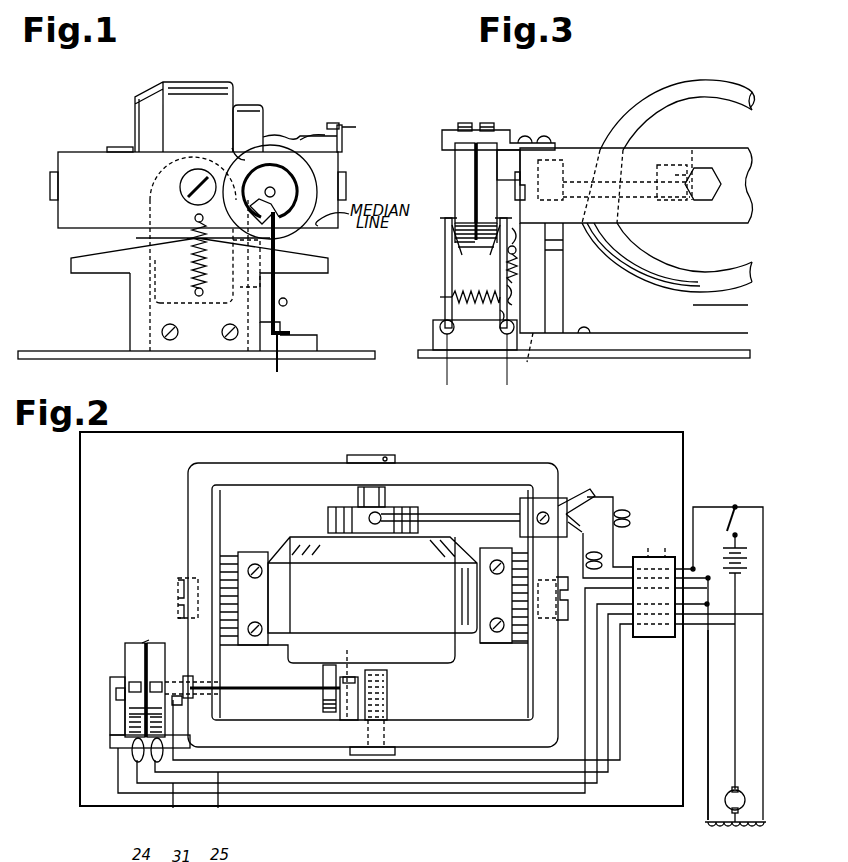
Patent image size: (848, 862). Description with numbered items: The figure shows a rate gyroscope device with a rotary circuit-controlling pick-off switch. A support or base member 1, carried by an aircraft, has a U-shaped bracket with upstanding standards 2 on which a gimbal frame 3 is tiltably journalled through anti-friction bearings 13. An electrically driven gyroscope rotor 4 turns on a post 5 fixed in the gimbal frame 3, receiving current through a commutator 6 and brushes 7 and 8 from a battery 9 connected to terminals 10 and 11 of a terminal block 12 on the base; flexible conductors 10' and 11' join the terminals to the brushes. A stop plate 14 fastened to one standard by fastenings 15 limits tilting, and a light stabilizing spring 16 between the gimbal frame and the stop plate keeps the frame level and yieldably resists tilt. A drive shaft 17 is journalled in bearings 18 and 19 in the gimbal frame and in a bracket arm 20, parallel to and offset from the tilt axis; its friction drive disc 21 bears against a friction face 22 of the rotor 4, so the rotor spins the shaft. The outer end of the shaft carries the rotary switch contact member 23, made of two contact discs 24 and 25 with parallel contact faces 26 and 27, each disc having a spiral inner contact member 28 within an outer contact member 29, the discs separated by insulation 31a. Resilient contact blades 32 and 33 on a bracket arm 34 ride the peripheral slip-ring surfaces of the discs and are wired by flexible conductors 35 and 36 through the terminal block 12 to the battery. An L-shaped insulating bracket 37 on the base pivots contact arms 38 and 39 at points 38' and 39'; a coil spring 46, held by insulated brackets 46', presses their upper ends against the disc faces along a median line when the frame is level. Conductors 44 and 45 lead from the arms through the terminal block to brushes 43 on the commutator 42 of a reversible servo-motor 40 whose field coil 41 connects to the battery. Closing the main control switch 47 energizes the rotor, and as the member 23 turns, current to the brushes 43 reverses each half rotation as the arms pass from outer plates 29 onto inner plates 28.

In FIG. 1, the support or base member 1 is at (66, 336).
In FIG. 3, the support or base member 1 is at (621, 357).
In FIG. 2, the support or base member 1 is at (612, 415).
In FIG. 1, the supporting arms or standards 2 is at (160, 238).
In FIG. 3, the supporting arms or standards 2 is at (560, 288).
In FIG. 2, the supporting arms or standards 2 is at (248, 566).
In FIG. 1, the gimbal frame 3 is at (62, 226).
In FIG. 3, the gimbal frame 3 is at (578, 218).
In FIG. 2, the gimbal frame 3 is at (189, 557).
In FIG. 1, the gyroscope rotor 4 is at (210, 90).
In FIG. 3, the gyroscope rotor 4 is at (712, 74).
In FIG. 2, the gyroscope rotor 4 is at (384, 602).
In FIG. 2, the post 5 is at (388, 701).
In FIG. 2, the commutator 6 is at (330, 522).
In FIG. 2, the brush 7 is at (477, 516).
In FIG. 2, the brush 8 is at (495, 516).
In FIG. 2, the battery 9 is at (740, 575).
In FIG. 2, the terminal 10 is at (641, 545).
In FIG. 2, the flexible conductor 10' is at (616, 529).
In FIG. 2, the terminal 11 is at (665, 546).
In FIG. 2, the flexible conductor 11' is at (594, 555).
In FIG. 2, the terminal block 12 is at (648, 634).
In FIG. 1, the anti-friction bearings 13 is at (206, 180).
In FIG. 2, the anti-friction bearings 13 is at (190, 586).
In FIG. 1, the stop plate 14 is at (133, 318).
In FIG. 3, the stop plate 14 is at (535, 307).
In FIG. 2, the stop plate 14 is at (220, 539).
In FIG. 1, the fastenings 15 is at (226, 326).
In FIG. 3, the fastenings 15 is at (527, 343).
In FIG. 1, the stabilizing spring 16 is at (194, 266).
In FIG. 3, the stabilizing spring 16 is at (508, 258).
In FIG. 1, the drive shaft 17 is at (276, 193).
In FIG. 3, the drive shaft 17 is at (586, 190).
In FIG. 2, the drive shaft 17 is at (248, 692).
In FIG. 3, the bearing 18 is at (526, 182).
In FIG. 2, the bearing 18 is at (189, 676).
In FIG. 3, the bearing 19 is at (692, 158).
In FIG. 2, the bearing 19 is at (350, 667).
In FIG. 3, the bracket arm 20 is at (706, 203).
In FIG. 2, the bracket arm 20 is at (341, 712).
In FIG. 3, the friction drive disc 21 is at (656, 173).
In FIG. 2, the friction drive disc 21 is at (327, 704).
In FIG. 1, the friction face 22 is at (263, 116).
In FIG. 3, the friction face 22 is at (733, 127).
In FIG. 2, the friction face 22 is at (410, 664).
In FIG. 1, the rotary switch contact member 23 is at (327, 168).
In FIG. 3, the rotary switch contact member 23 is at (443, 184).
In FIG. 2, the rotary switch contact member 23 is at (115, 645).
In FIG. 1, the contact disc 24 is at (250, 141).
In FIG. 3, the contact disc 24 is at (454, 163).
In FIG. 2, the contact disc 24 is at (138, 636).
In FIG. 3, the contact disc 25 is at (481, 196).
In FIG. 2, the contact disc 25 is at (160, 636).
In FIG. 3, the contact face 26 is at (447, 211).
In FIG. 1, the contact face 27 is at (293, 229).
In FIG. 3, the contact face 27 is at (508, 165).
In FIG. 1, the inner contact member 28 is at (283, 182).
In FIG. 1, the outer contact member 29 is at (242, 156).
In FIG. 2, the insulation 31a is at (146, 640).
In FIG. 3, the contact blade 32 is at (455, 137).
In FIG. 2, the contact blade 32 is at (135, 727).
In FIG. 3, the contact blade 33 is at (497, 134).
In FIG. 2, the contact blade 33 is at (140, 712).
In FIG. 3, the bracket arm 34 is at (540, 133).
In FIG. 2, the bracket arm 34 is at (114, 743).
In FIG. 2, the flexible conductor 35 is at (173, 800).
In FIG. 2, the flexible conductor 36 is at (218, 798).
In FIG. 1, the L-shaped supporting bracket 37 is at (318, 345).
In FIG. 3, the L-shaped supporting bracket 37 is at (470, 336).
In FIG. 1, the contact arm 38 is at (291, 292).
In FIG. 3, the contact arm 38 is at (460, 273).
In FIG. 2, the contact arm 38 is at (91, 706).
In FIG. 1, the pivot point 38' is at (299, 316).
In FIG. 3, the pivot point 38' is at (458, 352).
In FIG. 3, the contact arm 39 is at (493, 289).
In FIG. 2, the contact arm 39 is at (192, 705).
In FIG. 3, the pivot point 39' is at (488, 313).
In FIG. 2, the reversible servo-motor 40 is at (683, 829).
In FIG. 2, the field coil 41 is at (746, 836).
In FIG. 2, the commutator 42 is at (724, 803).
In FIG. 2, the brushes 43 is at (748, 784).
In FIG. 2, the conductor 44 is at (735, 745).
In FIG. 2, the conductor 45 is at (739, 600).
In FIG. 3, the coil spring 46 is at (476, 288).
In FIG. 3, the apertured insulated brackets 46' is at (429, 293).
In FIG. 2, the main control switch 47 is at (725, 528).